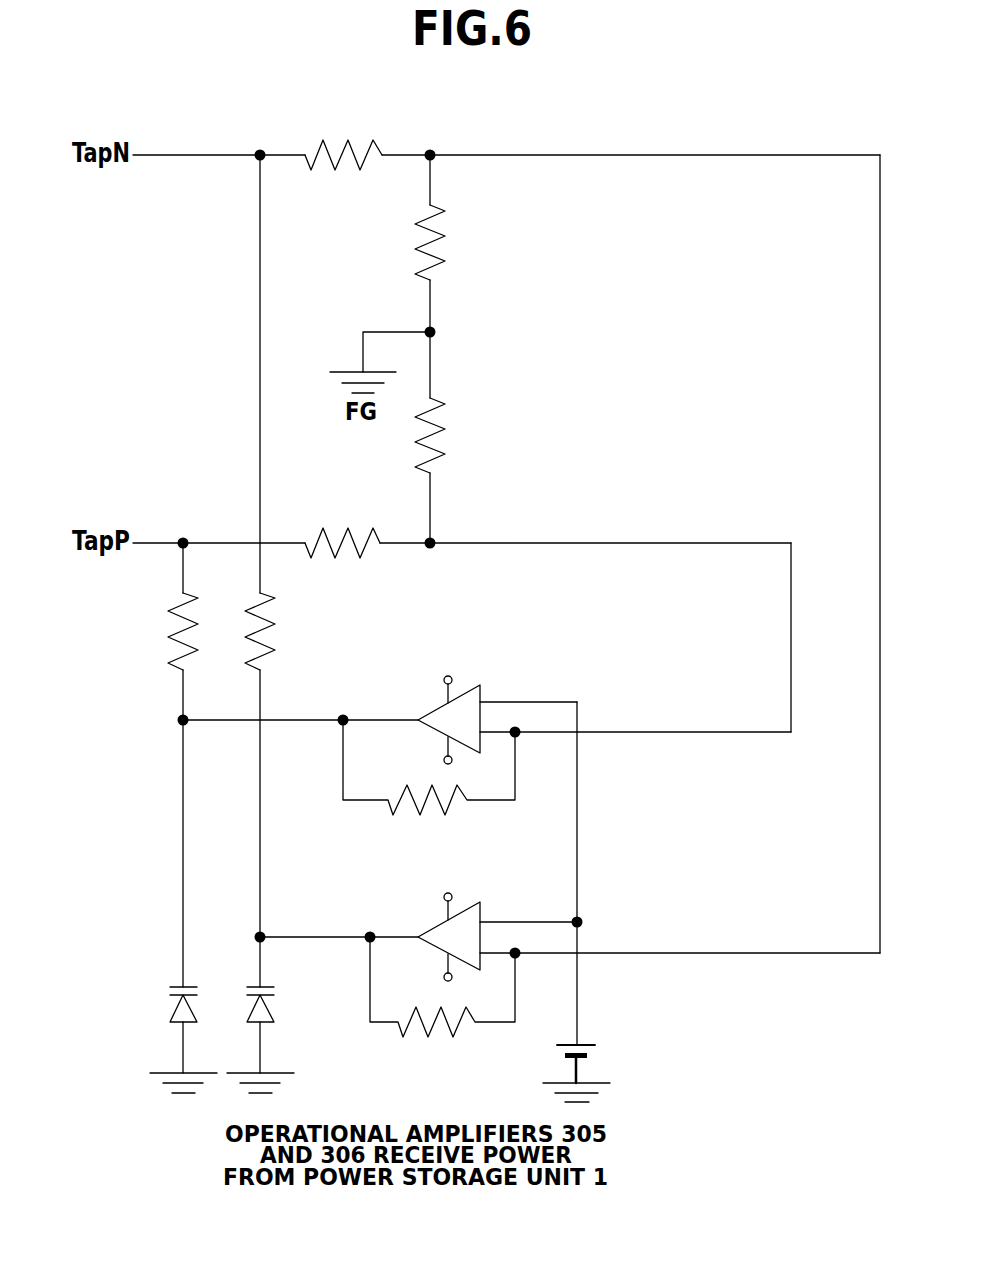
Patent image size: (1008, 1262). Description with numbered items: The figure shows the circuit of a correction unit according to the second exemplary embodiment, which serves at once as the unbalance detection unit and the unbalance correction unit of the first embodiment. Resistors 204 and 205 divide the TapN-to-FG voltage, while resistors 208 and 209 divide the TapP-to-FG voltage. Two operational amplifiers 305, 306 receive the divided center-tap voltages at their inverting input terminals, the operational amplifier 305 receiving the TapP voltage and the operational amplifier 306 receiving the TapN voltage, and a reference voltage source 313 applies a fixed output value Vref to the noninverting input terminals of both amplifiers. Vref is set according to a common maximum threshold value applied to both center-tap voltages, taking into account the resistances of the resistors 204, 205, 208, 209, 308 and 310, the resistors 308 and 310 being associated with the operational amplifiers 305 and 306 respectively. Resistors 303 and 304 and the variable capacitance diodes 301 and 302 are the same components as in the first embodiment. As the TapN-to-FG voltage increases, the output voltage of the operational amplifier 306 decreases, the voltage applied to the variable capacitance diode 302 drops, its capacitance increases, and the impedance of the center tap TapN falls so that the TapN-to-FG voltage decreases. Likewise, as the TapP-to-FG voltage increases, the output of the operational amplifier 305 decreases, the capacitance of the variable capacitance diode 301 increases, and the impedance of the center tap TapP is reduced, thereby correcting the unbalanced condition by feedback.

The resistor 204 is at (348, 140).
The resistor 205 is at (442, 237).
The resistor 208 is at (348, 528).
The resistor 209 is at (442, 431).
The variable capacitance diode 301 is at (170, 1003).
The variable capacitance diode 302 is at (275, 1003).
The resistor 303 is at (168, 638).
The resistor 304 is at (275, 625).
The operational amplifier 305 is at (432, 712).
The operational amplifier 306 is at (432, 929).
The resistor 308 is at (445, 815).
The resistor 310 is at (453, 1037).
The reference voltage source 313 is at (595, 1052).